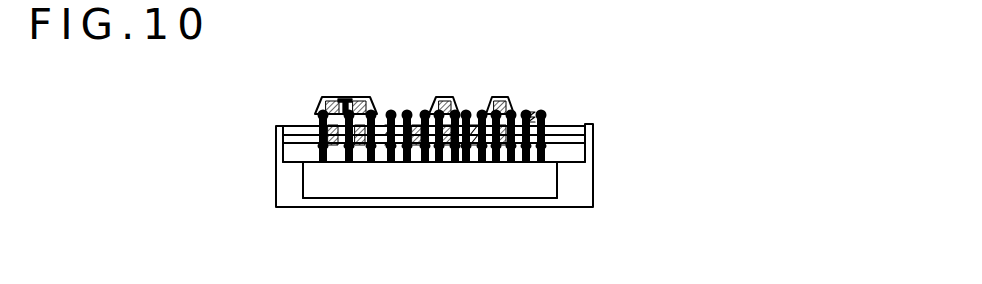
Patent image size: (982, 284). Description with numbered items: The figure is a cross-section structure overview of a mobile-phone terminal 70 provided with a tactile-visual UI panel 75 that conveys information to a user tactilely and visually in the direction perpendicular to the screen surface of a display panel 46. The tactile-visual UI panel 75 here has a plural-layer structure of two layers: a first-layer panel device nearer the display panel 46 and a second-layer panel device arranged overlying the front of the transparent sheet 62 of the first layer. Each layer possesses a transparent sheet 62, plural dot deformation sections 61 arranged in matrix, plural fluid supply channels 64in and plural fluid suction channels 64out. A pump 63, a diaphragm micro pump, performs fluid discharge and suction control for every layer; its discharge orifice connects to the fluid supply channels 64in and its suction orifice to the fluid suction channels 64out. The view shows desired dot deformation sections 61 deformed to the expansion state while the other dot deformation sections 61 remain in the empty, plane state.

The mobile-phone terminal 70 is at (258, 138).
The pump 63 is at (287, 177).
The transparent sheet 62 is at (583, 128).
The display panel 46 is at (580, 153).
The dot deformation section 61 is at (412, 109).
The fluid supply channel 64in is at (318, 138).
The fluid suction channel 64out is at (547, 123).
The tactile-visual UI panel 75 is at (538, 82).